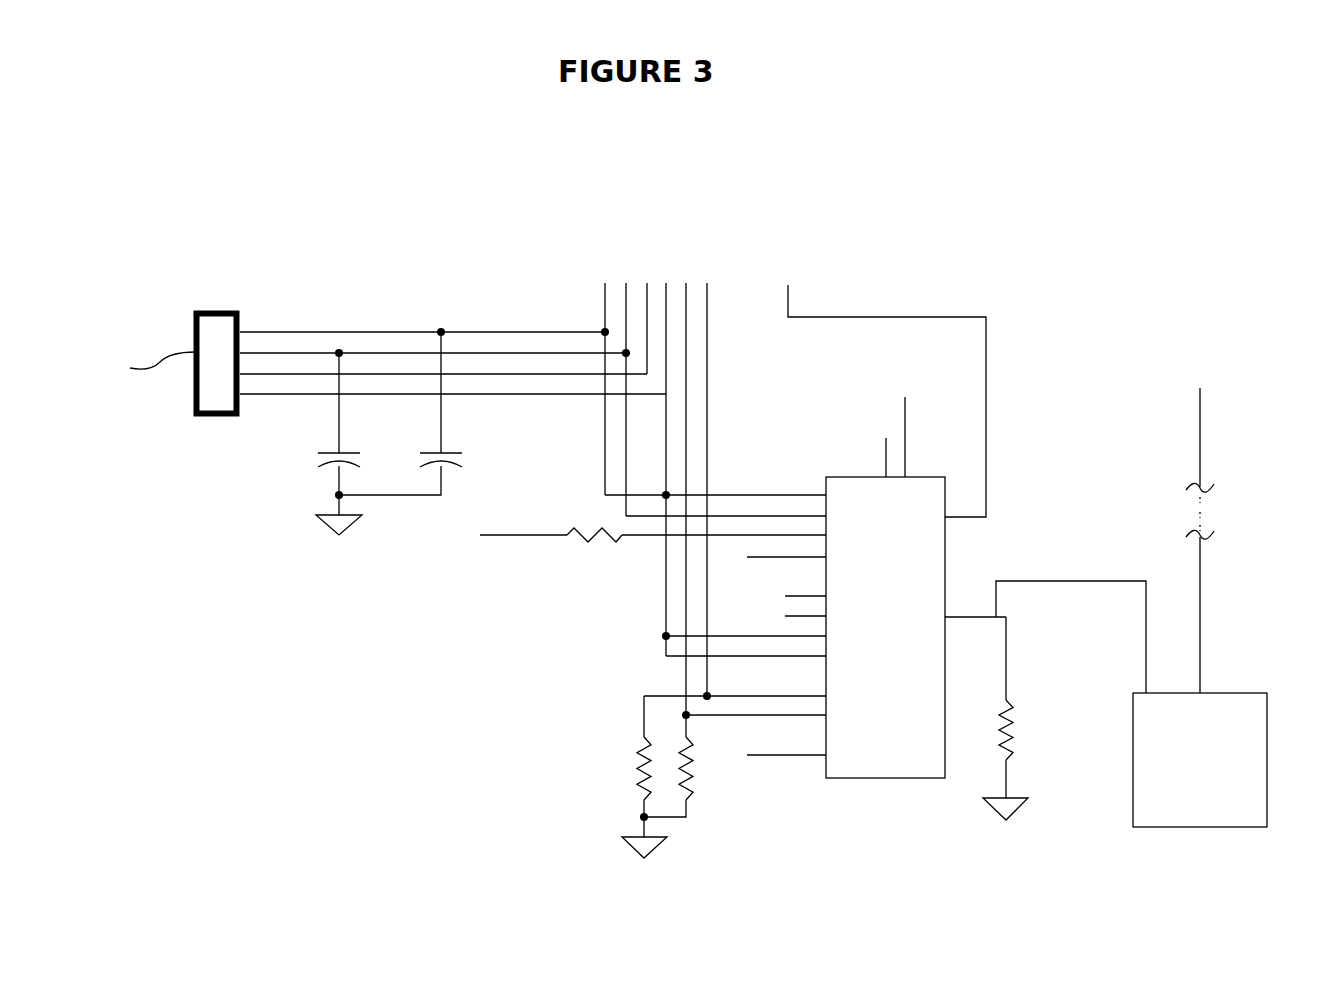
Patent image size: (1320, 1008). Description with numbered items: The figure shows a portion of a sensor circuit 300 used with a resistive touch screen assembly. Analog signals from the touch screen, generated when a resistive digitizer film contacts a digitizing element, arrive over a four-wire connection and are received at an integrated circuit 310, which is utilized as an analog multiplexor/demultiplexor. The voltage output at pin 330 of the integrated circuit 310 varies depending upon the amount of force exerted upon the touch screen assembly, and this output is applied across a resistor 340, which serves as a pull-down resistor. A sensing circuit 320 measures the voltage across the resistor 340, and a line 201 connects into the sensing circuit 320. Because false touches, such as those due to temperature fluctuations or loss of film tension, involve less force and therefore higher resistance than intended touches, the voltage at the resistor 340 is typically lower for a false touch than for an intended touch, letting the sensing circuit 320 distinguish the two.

The sensor circuit 300 is at (698, 473).
The line to sensing circuit 201 is at (1200, 437).
The integrated circuit 310 is at (935, 780).
The sensing circuit 320 is at (1200, 760).
The pin 330 is at (953, 620).
The resistor 340 is at (1032, 690).